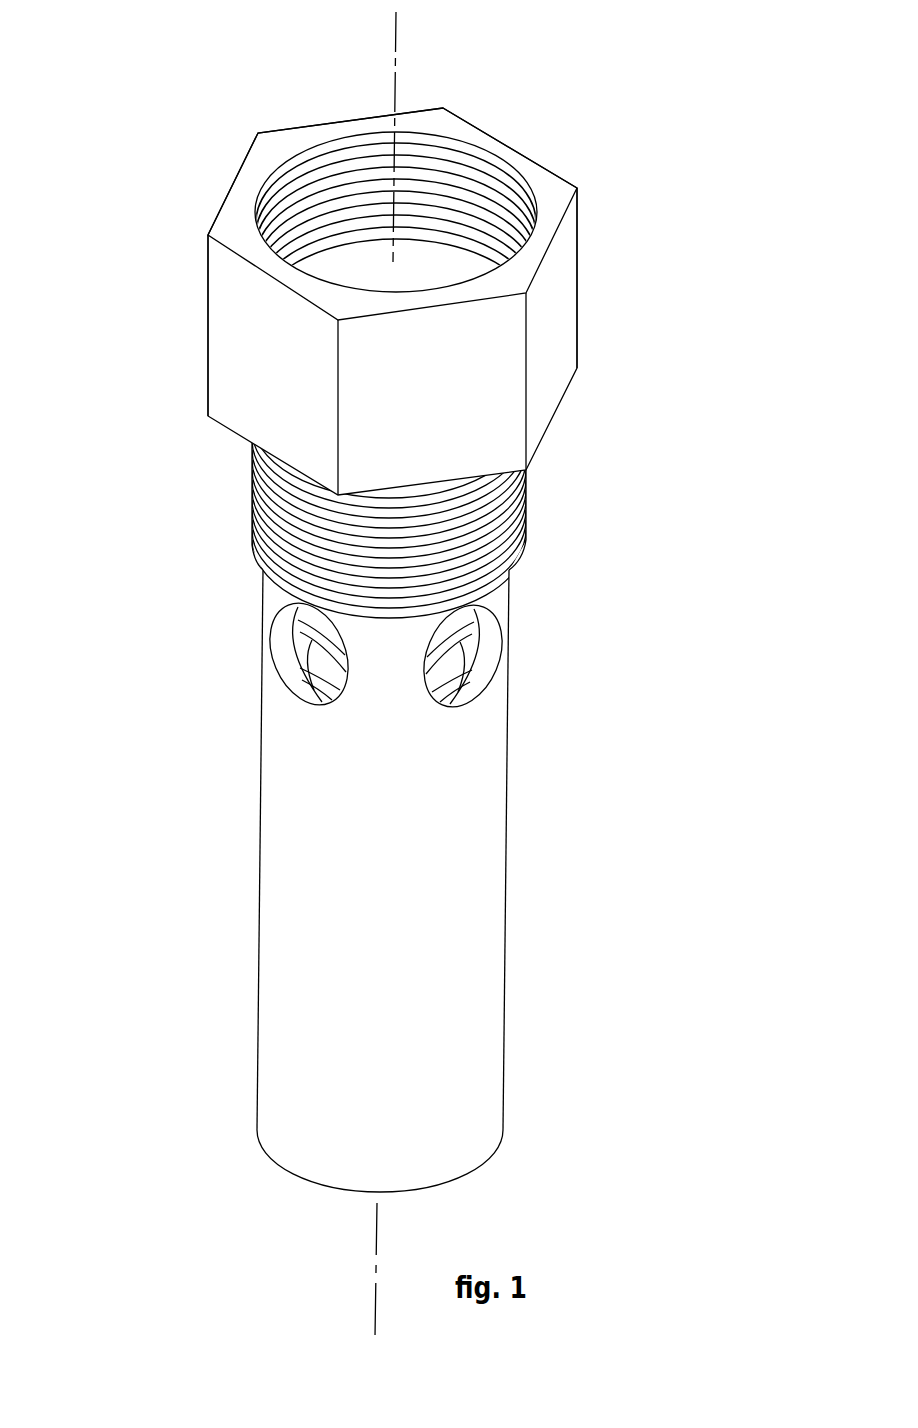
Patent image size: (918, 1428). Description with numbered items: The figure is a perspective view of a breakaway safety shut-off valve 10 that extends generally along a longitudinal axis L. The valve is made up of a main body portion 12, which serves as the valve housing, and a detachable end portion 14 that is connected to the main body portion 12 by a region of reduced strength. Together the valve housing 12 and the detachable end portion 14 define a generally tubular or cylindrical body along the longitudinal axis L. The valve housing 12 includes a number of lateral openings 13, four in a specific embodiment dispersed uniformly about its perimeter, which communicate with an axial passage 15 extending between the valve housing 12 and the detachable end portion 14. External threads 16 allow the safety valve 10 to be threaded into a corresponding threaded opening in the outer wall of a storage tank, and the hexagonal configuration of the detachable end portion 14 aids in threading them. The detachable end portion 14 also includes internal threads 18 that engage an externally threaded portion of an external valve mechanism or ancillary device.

The breakaway safety shut-off valve 10 is at (700, 274).
The main body portion 12 is at (217, 938).
The lateral openings 13 is at (273, 640).
The detachable end portion 14 is at (172, 326).
The axial passage 15 is at (446, 261).
The external threads 16 is at (527, 508).
The internal threads 18 is at (448, 180).
The longitudinal axis L is at (399, 64).